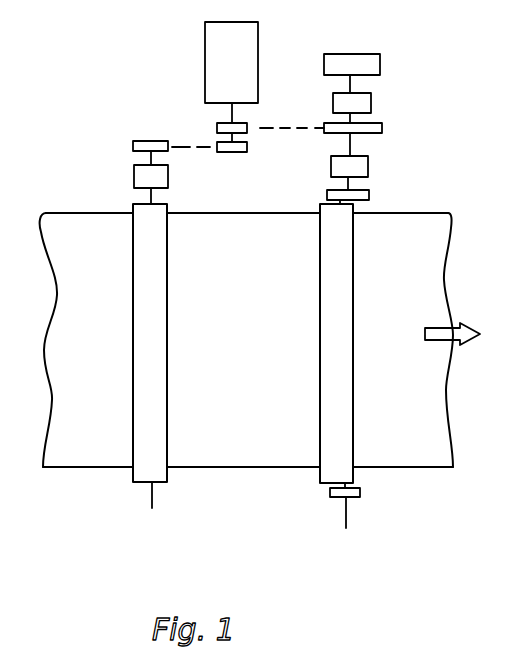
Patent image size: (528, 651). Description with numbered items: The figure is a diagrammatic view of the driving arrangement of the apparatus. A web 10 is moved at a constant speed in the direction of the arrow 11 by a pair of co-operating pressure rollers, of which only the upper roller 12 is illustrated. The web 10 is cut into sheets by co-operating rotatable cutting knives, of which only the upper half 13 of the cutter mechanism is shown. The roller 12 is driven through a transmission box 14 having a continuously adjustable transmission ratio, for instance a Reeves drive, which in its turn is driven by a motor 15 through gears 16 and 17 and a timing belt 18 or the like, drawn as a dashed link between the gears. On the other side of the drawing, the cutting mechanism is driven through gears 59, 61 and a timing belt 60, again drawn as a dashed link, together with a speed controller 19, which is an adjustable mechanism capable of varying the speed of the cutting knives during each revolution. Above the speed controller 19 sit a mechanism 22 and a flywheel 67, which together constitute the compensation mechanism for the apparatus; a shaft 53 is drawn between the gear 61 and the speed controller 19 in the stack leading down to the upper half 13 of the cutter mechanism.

The web 10 is at (253, 359).
The arrow 11 is at (436, 340).
The upper roller 12 is at (145, 450).
The upper half of the cutter mechanism 13 is at (340, 450).
The transmission box 14 is at (137, 176).
The motor 15 is at (218, 43).
The gear 16 is at (236, 153).
The gear 17 is at (133, 145).
The timing belt 18 is at (187, 148).
The speed controller 19 is at (352, 169).
The mechanism 22 is at (352, 103).
The shaft 53 is at (350, 143).
The gear 59 is at (215, 124).
The timing belt 60 is at (285, 130).
The gear 61 is at (365, 128).
The flywheel 67 is at (373, 67).